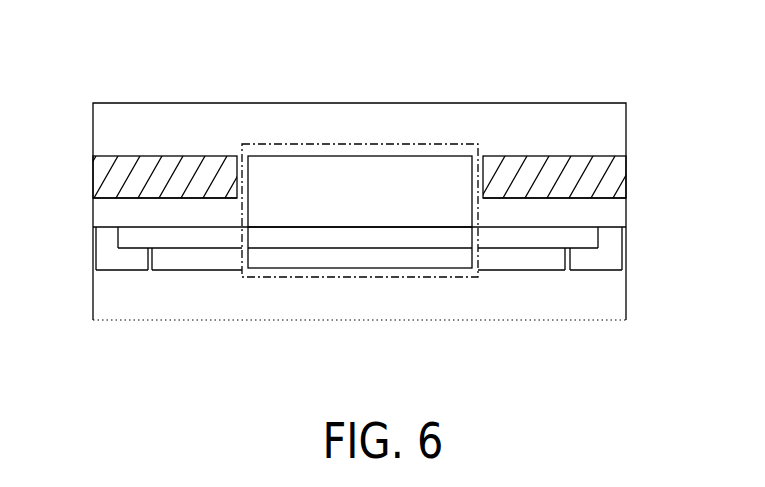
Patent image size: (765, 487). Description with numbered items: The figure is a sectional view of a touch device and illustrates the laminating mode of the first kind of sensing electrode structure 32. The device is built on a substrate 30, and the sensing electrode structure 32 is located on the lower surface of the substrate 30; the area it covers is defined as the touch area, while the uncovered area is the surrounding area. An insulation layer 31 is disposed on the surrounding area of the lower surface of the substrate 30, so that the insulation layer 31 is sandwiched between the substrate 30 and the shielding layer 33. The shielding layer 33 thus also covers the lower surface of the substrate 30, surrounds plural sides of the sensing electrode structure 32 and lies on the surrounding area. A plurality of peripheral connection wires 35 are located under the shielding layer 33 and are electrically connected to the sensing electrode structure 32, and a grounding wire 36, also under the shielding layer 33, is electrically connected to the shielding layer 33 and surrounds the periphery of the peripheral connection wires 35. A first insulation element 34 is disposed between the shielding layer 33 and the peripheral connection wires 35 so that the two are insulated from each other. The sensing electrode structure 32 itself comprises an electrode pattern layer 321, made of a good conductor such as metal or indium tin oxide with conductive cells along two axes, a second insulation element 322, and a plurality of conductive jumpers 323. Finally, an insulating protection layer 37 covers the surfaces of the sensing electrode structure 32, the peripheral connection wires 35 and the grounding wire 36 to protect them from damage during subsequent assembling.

The substrate 30 is at (596, 125).
The insulation layer 31 is at (112, 178).
The sensing electrode structure 32 is at (442, 143).
The shielding layer 33 is at (612, 215).
The first insulation element 34 is at (193, 237).
The peripheral connection wires 35 is at (168, 260).
The grounding wire 36 is at (611, 257).
The insulating protection layer 37 is at (213, 299).
The electrode pattern layer 321 is at (405, 202).
The second insulation element 322 is at (341, 240).
The conductive jumpers 323 is at (330, 258).